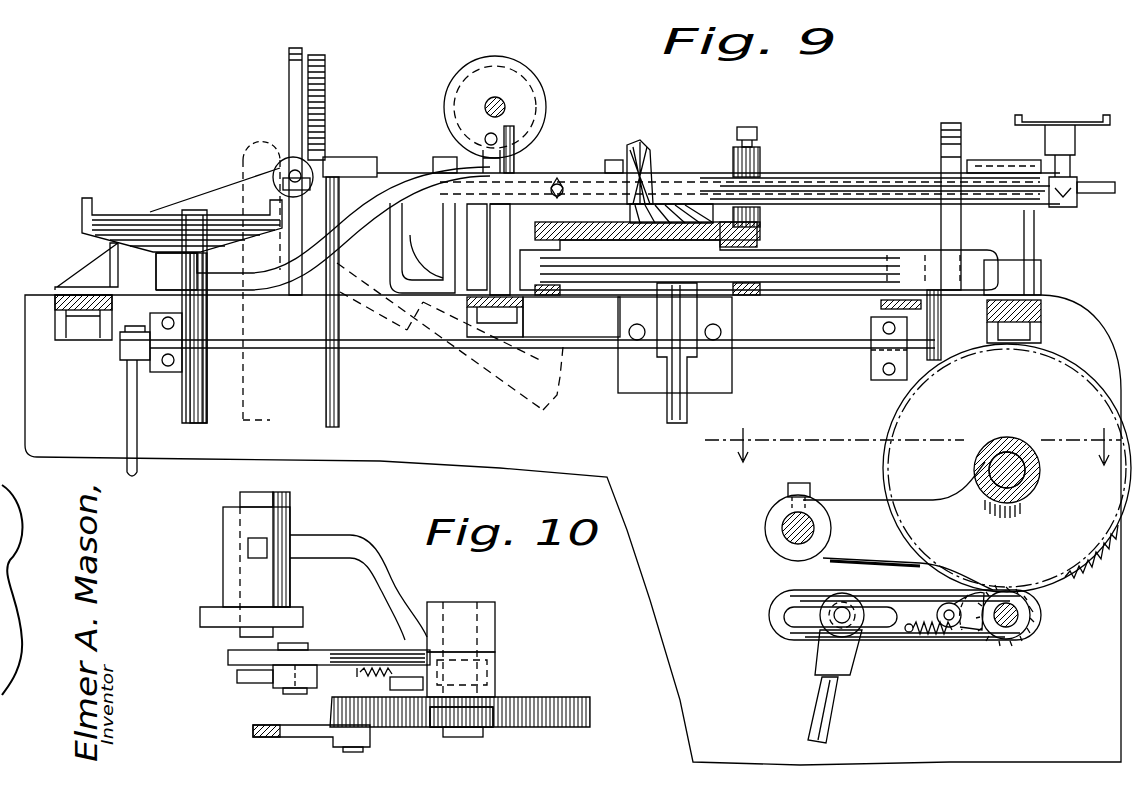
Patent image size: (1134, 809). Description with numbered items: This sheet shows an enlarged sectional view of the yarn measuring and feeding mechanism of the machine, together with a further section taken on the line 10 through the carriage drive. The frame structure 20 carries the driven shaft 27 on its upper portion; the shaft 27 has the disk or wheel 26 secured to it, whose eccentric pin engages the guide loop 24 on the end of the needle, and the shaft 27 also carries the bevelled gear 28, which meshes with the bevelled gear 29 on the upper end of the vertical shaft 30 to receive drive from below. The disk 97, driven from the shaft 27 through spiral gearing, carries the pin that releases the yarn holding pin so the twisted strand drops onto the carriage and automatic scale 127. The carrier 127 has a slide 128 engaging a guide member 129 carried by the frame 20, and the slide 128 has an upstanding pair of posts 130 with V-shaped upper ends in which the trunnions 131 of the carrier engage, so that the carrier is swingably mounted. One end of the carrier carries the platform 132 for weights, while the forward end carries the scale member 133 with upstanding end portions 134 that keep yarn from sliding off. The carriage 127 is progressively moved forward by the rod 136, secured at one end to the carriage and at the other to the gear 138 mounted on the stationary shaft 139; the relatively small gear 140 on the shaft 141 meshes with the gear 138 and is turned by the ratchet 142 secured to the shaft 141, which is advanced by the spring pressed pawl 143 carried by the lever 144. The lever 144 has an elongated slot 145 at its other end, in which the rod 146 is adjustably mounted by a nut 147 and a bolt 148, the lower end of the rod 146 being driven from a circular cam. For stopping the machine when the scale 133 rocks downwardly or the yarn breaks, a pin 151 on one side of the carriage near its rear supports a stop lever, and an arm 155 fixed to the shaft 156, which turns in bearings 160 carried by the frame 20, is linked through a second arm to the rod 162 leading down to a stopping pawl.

In FIG. 9, the section line 10— 10 is at (913, 445).
In FIG. 9, the frame structure 20 is at (1044, 303).
In FIG. 9, the guide loop 24 is at (301, 48).
In FIG. 9, the disk or wheel 26 is at (325, 97).
In FIG. 9, the driven shaft 27 is at (854, 173).
In FIG. 9, the bevelled gear 28 is at (643, 157).
In FIG. 9, the bevelled gear 29 is at (730, 170).
In FIG. 9, the vertical shaft 30 is at (673, 407).
In FIG. 9, the disk 97 is at (540, 84).
In FIG. 9, the carriage and automatic scale 127 is at (787, 187).
In FIG. 9, the slide 128 is at (764, 230).
In FIG. 9, the guide member 129 is at (851, 250).
In FIG. 9, the posts 130 is at (540, 185).
In FIG. 9, the trunnions 131 is at (560, 186).
In FIG. 9, the platform 132 is at (1061, 120).
In FIG. 9, the scale member 133 is at (105, 215).
In FIG. 9, the upstanding end portions 134 is at (82, 207).
In FIG. 10, the rod 136 is at (310, 740).
In FIG. 9, the gear 138 is at (1074, 577).
In FIG. 10, the gear 138 is at (587, 705).
In FIG. 9, the stationary shaft 139 is at (1031, 482).
In FIG. 10, the small gear 140 is at (523, 697).
In FIG. 9, the shaft 141 is at (1004, 630).
In FIG. 9, the ratchet 142 is at (984, 630).
In FIG. 10, the ratchet 142 is at (487, 673).
In FIG. 9, the spring pressed pawl 143 is at (970, 600).
In FIG. 10, the spring pressed pawl 143 is at (373, 668).
In FIG. 9, the lever 144 is at (913, 597).
In FIG. 10, the lever 144 is at (363, 653).
In FIG. 9, the elongated slot 145 is at (794, 620).
In FIG. 9, the rod 146 is at (817, 702).
In FIG. 10, the rod 146 is at (250, 683).
In FIG. 9, the nut 147 is at (847, 597).
In FIG. 10, the nut 147 is at (300, 652).
In FIG. 9, the bolt 148 is at (830, 595).
In FIG. 10, the bolt 148 is at (293, 688).
In FIG. 9, the pin 151 is at (1104, 170).
In FIG. 9, the arm 155 is at (934, 322).
In FIG. 9, the shaft 156 is at (563, 343).
In FIG. 9, the bearings 160 is at (871, 370).
In FIG. 9, the rod 162 is at (128, 430).